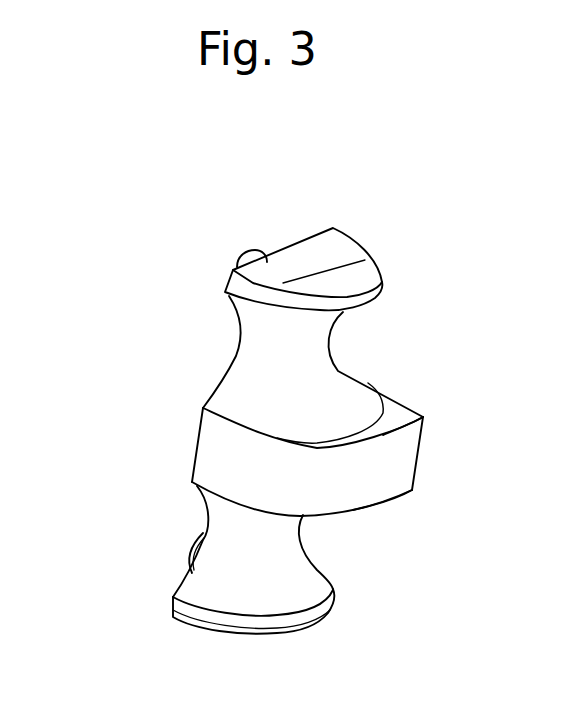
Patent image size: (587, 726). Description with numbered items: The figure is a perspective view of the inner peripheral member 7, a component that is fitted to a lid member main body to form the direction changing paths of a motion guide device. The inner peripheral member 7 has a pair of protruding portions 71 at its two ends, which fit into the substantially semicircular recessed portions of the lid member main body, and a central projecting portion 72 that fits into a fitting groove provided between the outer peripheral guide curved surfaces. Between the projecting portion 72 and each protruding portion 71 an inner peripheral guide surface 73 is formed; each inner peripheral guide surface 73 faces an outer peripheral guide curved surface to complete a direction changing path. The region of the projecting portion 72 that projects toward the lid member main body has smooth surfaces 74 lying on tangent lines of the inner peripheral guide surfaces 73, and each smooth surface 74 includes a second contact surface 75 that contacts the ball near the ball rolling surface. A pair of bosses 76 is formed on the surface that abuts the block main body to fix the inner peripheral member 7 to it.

The inner peripheral member 7 is at (108, 242).
The protruding portion 71 is at (363, 266).
The projecting portion 72 is at (400, 465).
The inner peripheral guide surface 73 is at (312, 352).
The smooth surface 74 is at (400, 412).
The second contact surface 75 is at (367, 383).
The boss 76 is at (254, 254).